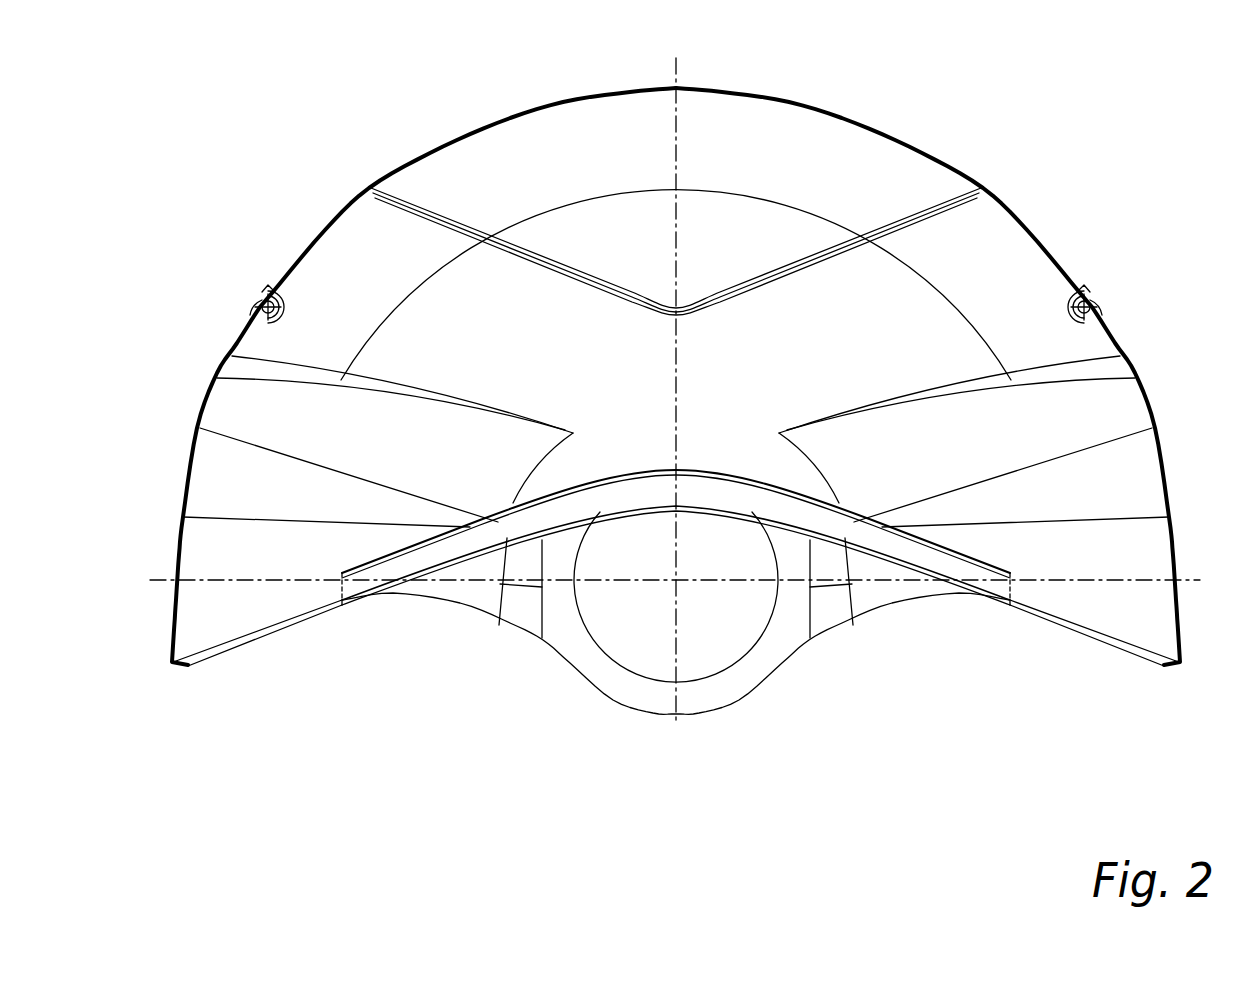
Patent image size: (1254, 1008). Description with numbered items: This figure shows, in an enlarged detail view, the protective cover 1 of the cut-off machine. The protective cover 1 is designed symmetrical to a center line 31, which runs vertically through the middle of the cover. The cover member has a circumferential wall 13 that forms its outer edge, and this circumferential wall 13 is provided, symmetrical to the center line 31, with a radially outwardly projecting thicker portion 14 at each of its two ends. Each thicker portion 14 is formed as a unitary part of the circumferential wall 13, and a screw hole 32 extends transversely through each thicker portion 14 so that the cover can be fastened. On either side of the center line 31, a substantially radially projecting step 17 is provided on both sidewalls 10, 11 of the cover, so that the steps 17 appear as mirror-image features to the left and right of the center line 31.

The protective cover 1 is at (920, 173).
The sidewall 10 is at (780, 366).
The sidewall 11 is at (862, 588).
The circumferential wall 13 is at (1018, 204).
The thicker portion 14 is at (255, 312).
The step 17 is at (423, 383).
The center line 31 is at (677, 67).
The screw hole 32 is at (263, 296).